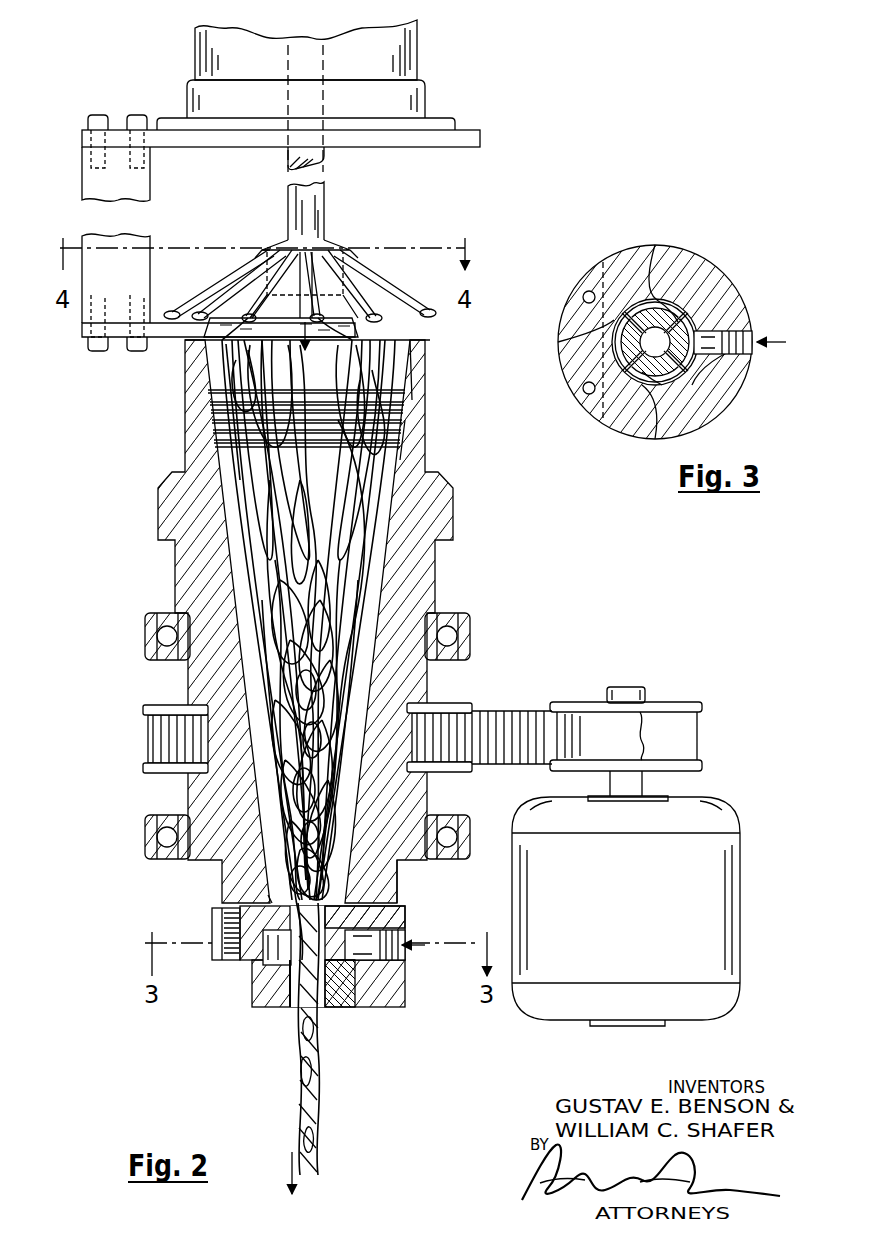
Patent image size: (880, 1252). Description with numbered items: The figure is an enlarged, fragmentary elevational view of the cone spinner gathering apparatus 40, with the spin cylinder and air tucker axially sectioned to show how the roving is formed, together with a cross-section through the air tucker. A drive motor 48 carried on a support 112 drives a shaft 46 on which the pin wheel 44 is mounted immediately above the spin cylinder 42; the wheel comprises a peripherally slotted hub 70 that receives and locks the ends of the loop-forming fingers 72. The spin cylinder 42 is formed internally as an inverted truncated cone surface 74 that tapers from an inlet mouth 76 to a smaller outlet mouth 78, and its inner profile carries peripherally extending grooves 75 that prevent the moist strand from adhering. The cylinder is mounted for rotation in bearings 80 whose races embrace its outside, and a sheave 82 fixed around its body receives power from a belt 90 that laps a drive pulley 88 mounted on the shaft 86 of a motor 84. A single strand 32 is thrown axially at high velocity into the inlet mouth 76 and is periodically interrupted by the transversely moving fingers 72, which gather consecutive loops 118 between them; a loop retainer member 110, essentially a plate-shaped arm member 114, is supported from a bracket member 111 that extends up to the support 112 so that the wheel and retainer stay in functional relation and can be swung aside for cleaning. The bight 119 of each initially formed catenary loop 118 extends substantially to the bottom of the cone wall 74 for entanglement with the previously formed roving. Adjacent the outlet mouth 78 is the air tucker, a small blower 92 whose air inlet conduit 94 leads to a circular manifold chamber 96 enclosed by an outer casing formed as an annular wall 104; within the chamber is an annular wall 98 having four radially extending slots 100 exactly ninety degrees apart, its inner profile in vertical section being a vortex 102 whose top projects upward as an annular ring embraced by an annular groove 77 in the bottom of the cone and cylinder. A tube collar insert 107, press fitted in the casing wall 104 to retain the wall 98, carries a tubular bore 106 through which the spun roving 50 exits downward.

In FIG. 2, the drive motor 48 is at (420, 57).
In FIG. 2, the support 112 is at (480, 137).
In FIG. 2, the bracket member 111 is at (82, 181).
In FIG. 2, the shaft 46 is at (288, 192).
In FIG. 2, the hub 70 is at (340, 246).
In FIG. 2, the apparatus 40 is at (304, 259).
In FIG. 2, the pin wheel 44 is at (258, 252).
In FIG. 2, the fingers 72 is at (396, 300).
In FIG. 2, the loop retainer member 110 is at (80, 329).
In FIG. 2, the inlet mouth 76 is at (410, 344).
In FIG. 2, the strand 32 is at (312, 352).
In FIG. 2, the arm member 114 is at (208, 354).
In FIG. 2, the loops 118 is at (210, 378).
In FIG. 2, the spin cylinder 42 is at (185, 426).
In FIG. 2, the grooves 75 is at (404, 418).
In FIG. 2, the truncated cone surface 74 is at (402, 468).
In FIG. 2, the bearings 80 is at (150, 628).
In FIG. 2, the sheave 82 is at (455, 705).
In FIG. 2, the belt 90 is at (505, 710).
In FIG. 2, the shaft 86 is at (626, 687).
In FIG. 2, the drive pulley 88 is at (672, 702).
In FIG. 2, the motor 84 is at (740, 845).
In FIG. 2, the outlet mouth 78 is at (268, 888).
In FIG. 2, the bight 119 is at (272, 902).
In FIG. 2, the annular groove 77 is at (372, 892).
In FIG. 2, the air blower 92 is at (312, 963).
In FIG. 3, the air blower 92 is at (648, 342).
In FIG. 2, the vortex 102 is at (410, 916).
In FIG. 3, the vortex 102 is at (654, 430).
In FIG. 2, the annular wall 104 is at (212, 925).
In FIG. 3, the annular wall 104 is at (591, 398).
In FIG. 2, the air inlet conduit 94 is at (408, 954).
In FIG. 3, the air inlet conduit 94 is at (746, 350).
In FIG. 2, the manifold chamber 96 is at (268, 950).
In FIG. 3, the manifold chamber 96 is at (662, 272).
In FIG. 2, the annular wall 98 is at (345, 1005).
In FIG. 3, the annular wall 98 is at (690, 380).
In FIG. 3, the slots 100 is at (692, 328).
In FIG. 2, the tubular bore 106 is at (292, 1007).
In FIG. 2, the tube collar insert 107 is at (340, 1012).
In FIG. 2, the spun roving 50 is at (320, 1168).